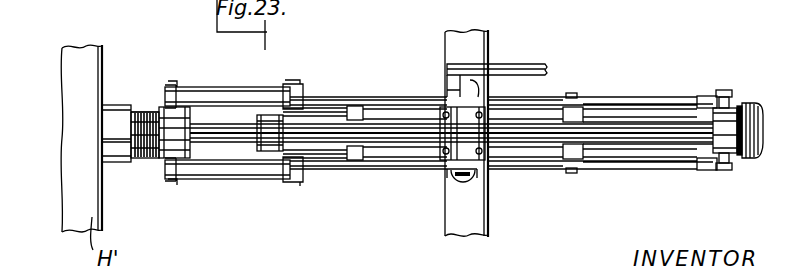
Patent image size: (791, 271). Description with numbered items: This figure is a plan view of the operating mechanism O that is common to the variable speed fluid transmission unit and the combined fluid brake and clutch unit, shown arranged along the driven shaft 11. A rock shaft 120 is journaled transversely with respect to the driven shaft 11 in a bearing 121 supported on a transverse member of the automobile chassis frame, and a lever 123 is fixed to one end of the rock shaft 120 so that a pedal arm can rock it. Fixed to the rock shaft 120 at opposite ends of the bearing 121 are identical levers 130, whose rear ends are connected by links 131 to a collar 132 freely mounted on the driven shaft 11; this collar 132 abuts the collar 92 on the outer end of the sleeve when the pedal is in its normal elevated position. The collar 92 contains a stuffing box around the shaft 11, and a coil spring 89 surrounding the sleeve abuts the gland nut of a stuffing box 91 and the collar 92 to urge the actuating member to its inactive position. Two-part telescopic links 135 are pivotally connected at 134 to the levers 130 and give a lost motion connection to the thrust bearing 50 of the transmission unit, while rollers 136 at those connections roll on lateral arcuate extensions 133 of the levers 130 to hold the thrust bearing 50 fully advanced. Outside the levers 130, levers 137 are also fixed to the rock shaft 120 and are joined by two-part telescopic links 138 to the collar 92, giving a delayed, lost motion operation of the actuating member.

The driven shaft 11 is at (218, 126).
The thrust bearing 50 is at (727, 124).
The coil spring 89 is at (148, 158).
The stuffing box 91 is at (133, 110).
The collar 92 is at (180, 133).
The rock shaft 120 is at (462, 180).
The bearing 121 is at (457, 133).
The lever 123 is at (518, 68).
The levers 130 is at (548, 99).
The links 131 is at (318, 110).
The collar 132 is at (261, 133).
The lateral arcuate extensions 133 is at (705, 96).
The pivotal connection 134 is at (575, 96).
The two-part links 135 is at (630, 108).
The rollers 136 is at (732, 97).
The levers 137 is at (387, 97).
The two-part links 138 is at (258, 94).
The operating mechanism O is at (353, 105).